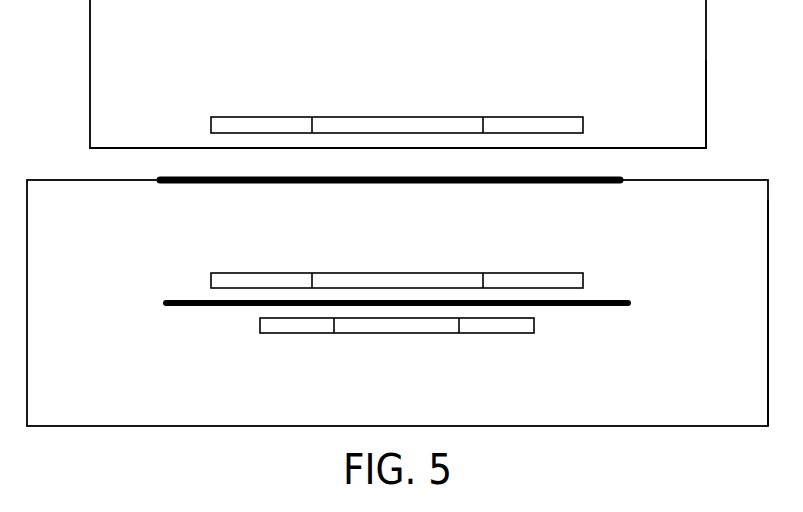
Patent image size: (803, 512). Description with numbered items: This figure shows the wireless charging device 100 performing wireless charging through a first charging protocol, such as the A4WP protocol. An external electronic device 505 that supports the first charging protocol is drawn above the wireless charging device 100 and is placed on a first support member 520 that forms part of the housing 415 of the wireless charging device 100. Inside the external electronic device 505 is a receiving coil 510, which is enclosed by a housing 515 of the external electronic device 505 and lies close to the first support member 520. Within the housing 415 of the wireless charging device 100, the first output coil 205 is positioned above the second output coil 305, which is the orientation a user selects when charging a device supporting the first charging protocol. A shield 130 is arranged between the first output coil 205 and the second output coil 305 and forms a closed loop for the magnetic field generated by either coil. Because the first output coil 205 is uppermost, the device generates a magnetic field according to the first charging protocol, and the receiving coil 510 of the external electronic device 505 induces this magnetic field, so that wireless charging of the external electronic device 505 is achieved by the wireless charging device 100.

The external electronic device 505 is at (538, 36).
The receiving coil 510 is at (314, 104).
The housing 515 is at (676, 106).
The wireless charging device 100 is at (535, 421).
The housing 415 is at (758, 262).
The first support member 520 is at (577, 225).
The first output coil 205 is at (267, 255).
The shield 130 is at (589, 319).
The second output coil 305 is at (243, 332).